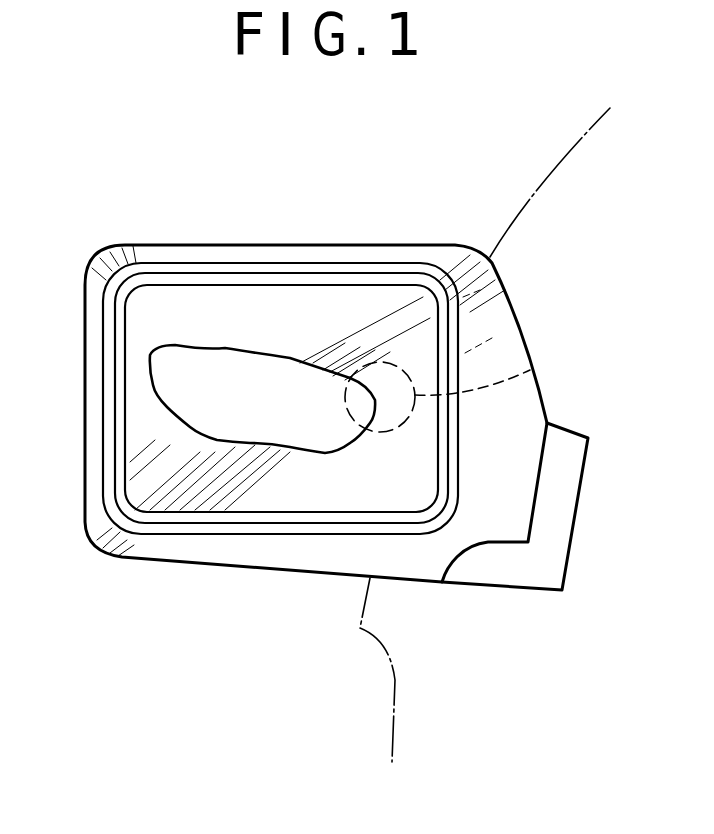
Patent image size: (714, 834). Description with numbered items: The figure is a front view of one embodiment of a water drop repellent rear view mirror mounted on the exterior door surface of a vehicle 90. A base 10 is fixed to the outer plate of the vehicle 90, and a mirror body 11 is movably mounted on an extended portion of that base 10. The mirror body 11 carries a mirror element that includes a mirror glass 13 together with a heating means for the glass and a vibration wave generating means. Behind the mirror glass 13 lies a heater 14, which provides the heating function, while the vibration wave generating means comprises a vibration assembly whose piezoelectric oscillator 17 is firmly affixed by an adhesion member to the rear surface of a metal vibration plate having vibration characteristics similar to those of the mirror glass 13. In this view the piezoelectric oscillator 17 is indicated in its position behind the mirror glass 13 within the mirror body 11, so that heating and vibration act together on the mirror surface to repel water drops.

The base 10 is at (555, 540).
The mirror body 11 is at (162, 253).
The mirror glass 13 is at (288, 305).
The heater 14 is at (162, 372).
The piezoelectric oscillator 17 is at (530, 370).
The vehicle 90 is at (520, 213).